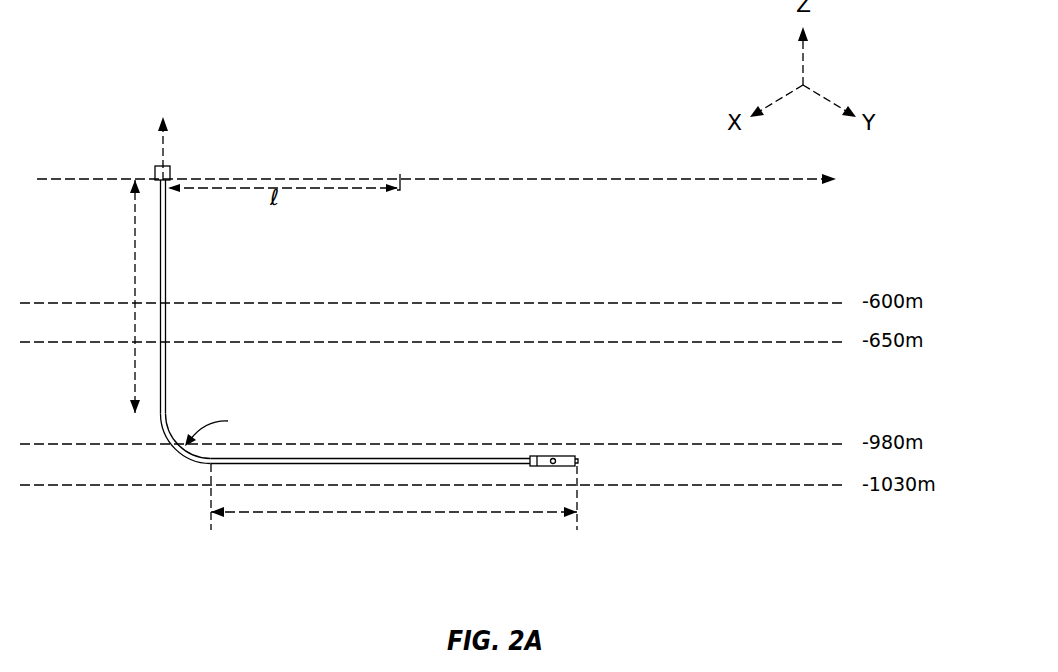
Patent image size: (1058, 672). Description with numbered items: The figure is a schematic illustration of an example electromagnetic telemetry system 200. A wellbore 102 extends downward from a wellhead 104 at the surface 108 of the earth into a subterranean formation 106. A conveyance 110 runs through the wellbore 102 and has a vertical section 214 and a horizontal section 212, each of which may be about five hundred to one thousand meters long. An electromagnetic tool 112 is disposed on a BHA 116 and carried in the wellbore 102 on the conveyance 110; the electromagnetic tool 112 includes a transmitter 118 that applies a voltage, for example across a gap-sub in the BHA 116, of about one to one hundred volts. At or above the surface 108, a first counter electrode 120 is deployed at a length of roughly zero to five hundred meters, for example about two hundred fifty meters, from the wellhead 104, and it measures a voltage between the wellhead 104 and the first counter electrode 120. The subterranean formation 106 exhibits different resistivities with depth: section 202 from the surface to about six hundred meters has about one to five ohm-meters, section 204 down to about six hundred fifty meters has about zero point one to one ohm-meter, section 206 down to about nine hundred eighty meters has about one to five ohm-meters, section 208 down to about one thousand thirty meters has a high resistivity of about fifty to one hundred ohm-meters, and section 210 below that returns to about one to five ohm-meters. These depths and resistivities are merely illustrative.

The EM telemetry system 200 is at (222, 44).
The wellbore 102 is at (176, 250).
The wellhead 104 is at (162, 165).
The subterranean formation 106 is at (474, 248).
The surface 108 is at (535, 178).
The conveyance 110 is at (167, 386).
The electromagnetic tool 112 is at (572, 455).
The BHA 116 is at (444, 450).
The transmitter 118 is at (551, 452).
The first counter electrode 120 is at (401, 175).
The section 202 is at (432, 268).
The section 204 is at (432, 326).
The section 206 is at (432, 411).
The section 208 is at (432, 469).
The section 210 is at (797, 516).
The horizontal section 212 is at (395, 513).
The vertical section 214 is at (134, 288).